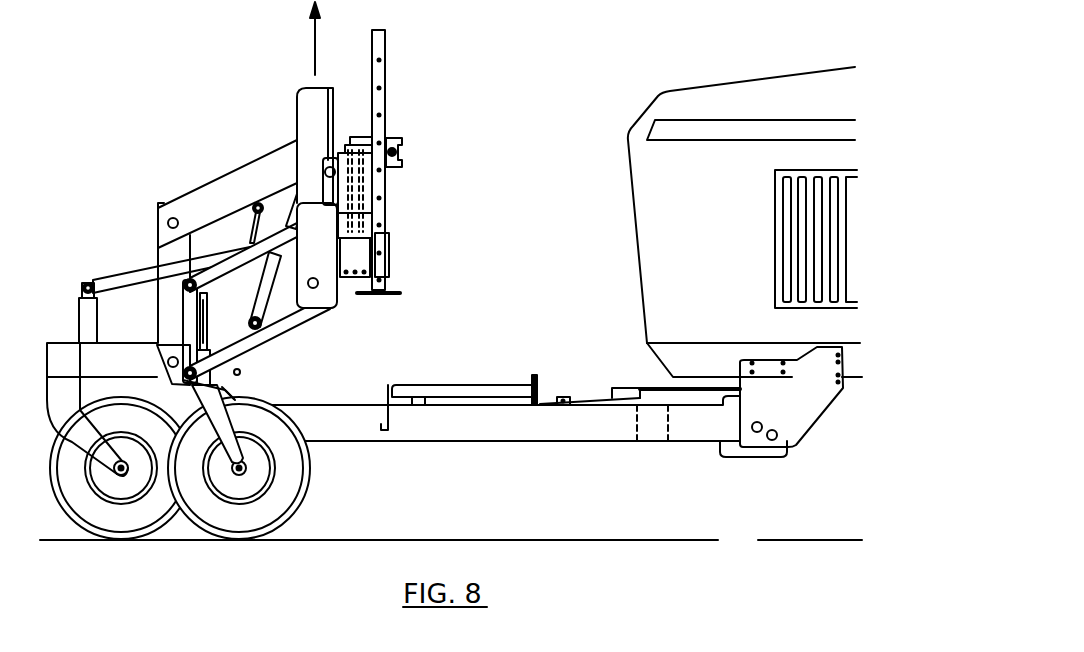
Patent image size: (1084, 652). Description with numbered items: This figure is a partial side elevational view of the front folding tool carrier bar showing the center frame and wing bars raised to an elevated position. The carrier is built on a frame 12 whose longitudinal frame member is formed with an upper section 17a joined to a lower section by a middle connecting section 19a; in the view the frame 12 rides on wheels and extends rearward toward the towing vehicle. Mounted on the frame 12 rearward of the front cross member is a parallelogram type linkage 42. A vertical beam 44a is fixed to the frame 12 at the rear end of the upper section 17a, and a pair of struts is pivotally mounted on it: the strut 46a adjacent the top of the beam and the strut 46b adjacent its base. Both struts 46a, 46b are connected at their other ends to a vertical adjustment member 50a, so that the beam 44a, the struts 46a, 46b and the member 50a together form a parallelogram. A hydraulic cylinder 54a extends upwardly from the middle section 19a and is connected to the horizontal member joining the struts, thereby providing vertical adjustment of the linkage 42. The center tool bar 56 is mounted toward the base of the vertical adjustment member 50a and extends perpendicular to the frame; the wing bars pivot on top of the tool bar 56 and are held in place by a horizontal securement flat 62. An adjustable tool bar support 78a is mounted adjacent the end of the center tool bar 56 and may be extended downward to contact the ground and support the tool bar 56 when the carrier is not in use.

The frame 12 is at (550, 452).
The upper section 17a is at (122, 367).
The middle connecting section 19a is at (270, 478).
The parallelogram type linkage 42 is at (248, 126).
The vertical beam 44a is at (158, 255).
The strut 46a is at (212, 192).
The strut 46b is at (232, 332).
The vertical adjustment member 50a is at (302, 98).
The hydraulic cylinder 54a is at (255, 282).
The center tool bar 56 is at (357, 258).
The horizontal securement flat 62 is at (367, 147).
The adjustable tool bar support 78a is at (382, 78).